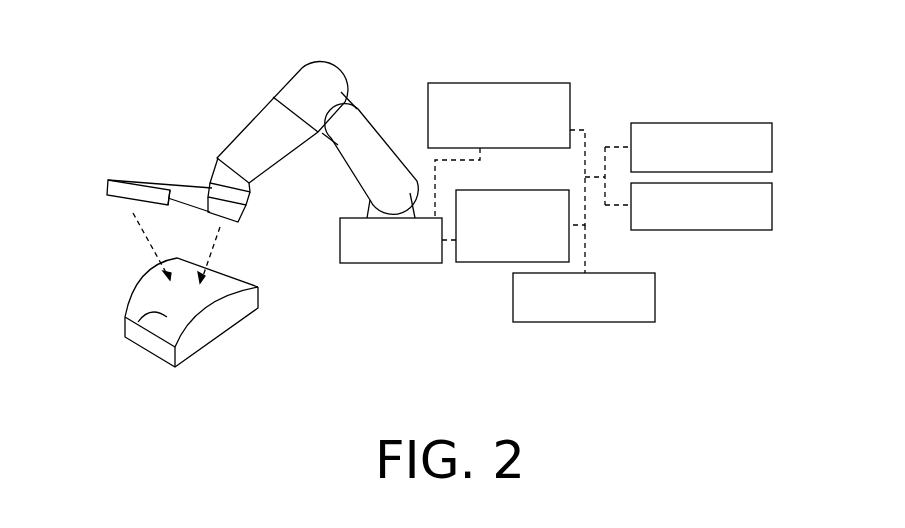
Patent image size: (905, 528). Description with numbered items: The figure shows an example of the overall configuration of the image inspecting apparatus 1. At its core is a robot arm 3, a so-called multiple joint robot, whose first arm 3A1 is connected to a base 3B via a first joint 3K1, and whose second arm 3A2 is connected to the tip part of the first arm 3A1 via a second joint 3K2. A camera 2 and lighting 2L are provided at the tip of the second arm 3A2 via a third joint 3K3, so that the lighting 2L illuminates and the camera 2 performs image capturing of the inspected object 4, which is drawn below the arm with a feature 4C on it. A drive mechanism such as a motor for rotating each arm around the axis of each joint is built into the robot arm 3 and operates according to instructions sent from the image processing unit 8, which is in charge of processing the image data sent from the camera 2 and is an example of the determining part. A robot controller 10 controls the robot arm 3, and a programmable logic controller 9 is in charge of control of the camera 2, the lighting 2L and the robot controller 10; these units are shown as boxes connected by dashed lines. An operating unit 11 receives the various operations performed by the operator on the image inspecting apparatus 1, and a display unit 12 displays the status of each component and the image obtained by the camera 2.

The image inspecting apparatus 1 is at (705, 41).
The camera 2 is at (203, 203).
The lighting 2L is at (110, 198).
The robot arm 3 is at (408, 47).
The first arm 3A1 is at (390, 127).
The second arm 3A2 is at (267, 97).
The base 3B is at (340, 247).
The first joint 3K1 is at (367, 207).
The second joint 3K2 is at (350, 100).
The third joint 3K3 is at (212, 172).
The workpiece / object 4 is at (127, 301).
The mark on object 4C is at (125, 335).
The image processing unit 8 is at (523, 190).
The programmable logic controller (PLC) 9 is at (655, 300).
The robot controller 10 is at (570, 112).
The operating unit 11 is at (772, 150).
The display unit 12 is at (772, 210).